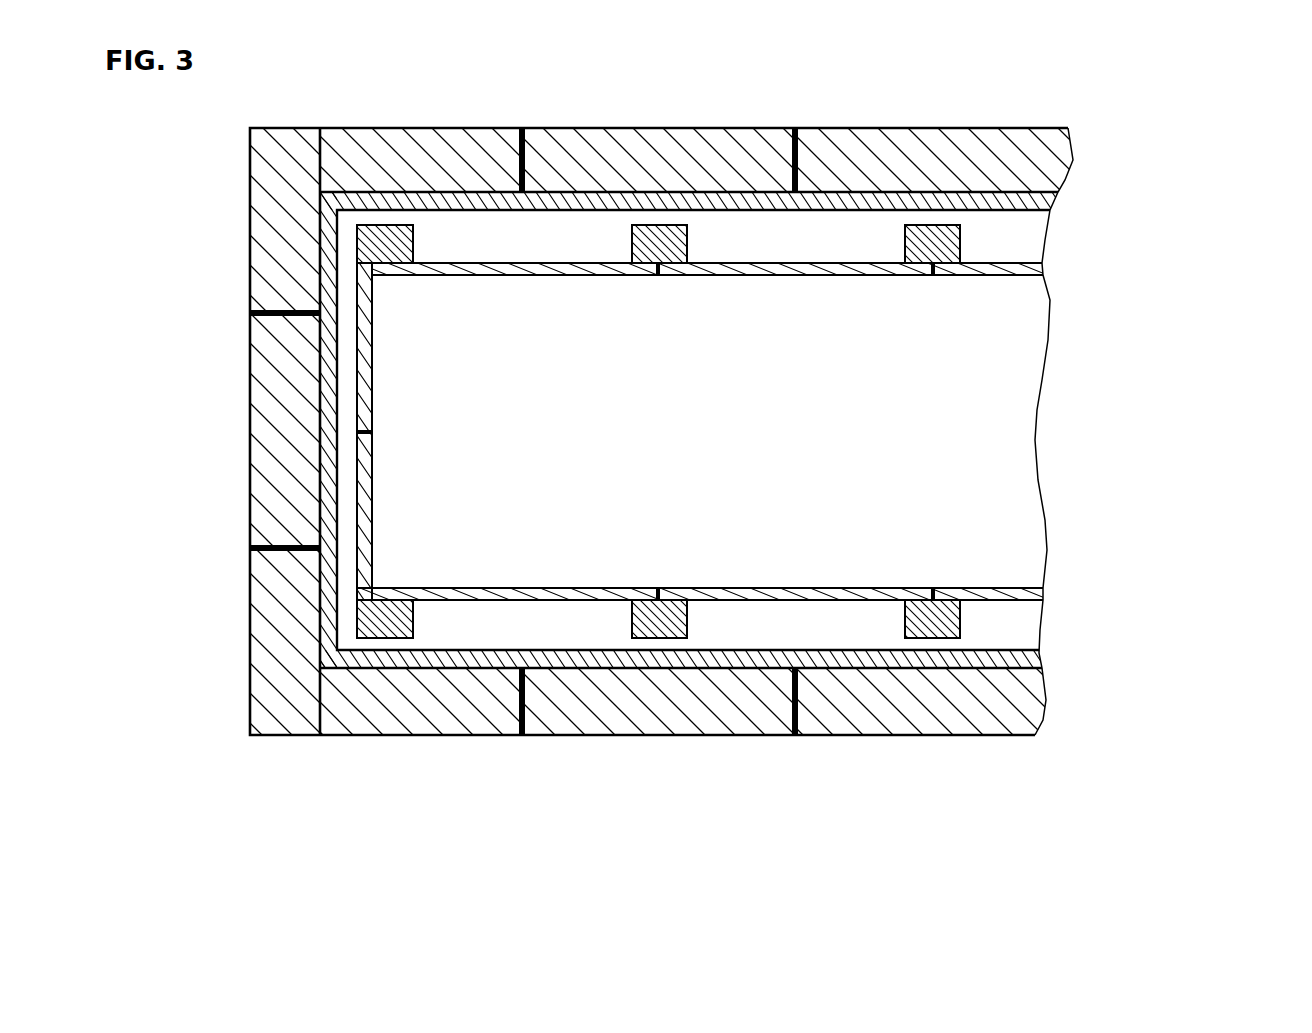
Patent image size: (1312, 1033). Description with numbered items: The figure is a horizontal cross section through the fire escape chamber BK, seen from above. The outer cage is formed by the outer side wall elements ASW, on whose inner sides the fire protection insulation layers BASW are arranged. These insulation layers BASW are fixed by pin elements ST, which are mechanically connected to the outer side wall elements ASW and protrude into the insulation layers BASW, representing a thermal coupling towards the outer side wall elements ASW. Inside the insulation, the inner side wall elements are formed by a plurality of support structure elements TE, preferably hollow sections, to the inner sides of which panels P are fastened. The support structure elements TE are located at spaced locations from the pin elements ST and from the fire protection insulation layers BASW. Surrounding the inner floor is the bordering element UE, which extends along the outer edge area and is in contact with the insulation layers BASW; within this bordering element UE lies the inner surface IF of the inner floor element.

The fire escape chamber BK is at (1203, 153).
The fire protection insulation layer BASW is at (420, 160).
The outer side wall element ASW is at (695, 130).
The pin element ST is at (519, 160).
The bordering element UE is at (843, 200).
The inner surface IF is at (1005, 418).
The panel P is at (508, 275).
The support structure element TE is at (388, 235).